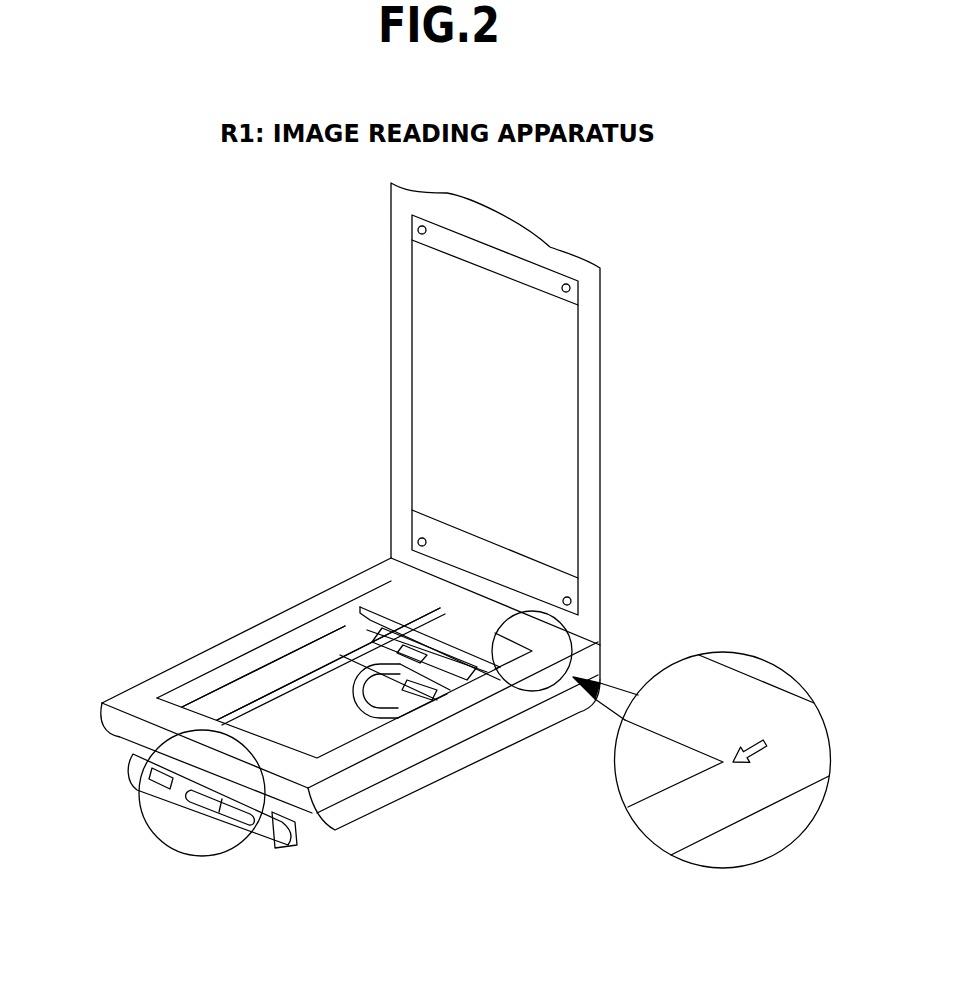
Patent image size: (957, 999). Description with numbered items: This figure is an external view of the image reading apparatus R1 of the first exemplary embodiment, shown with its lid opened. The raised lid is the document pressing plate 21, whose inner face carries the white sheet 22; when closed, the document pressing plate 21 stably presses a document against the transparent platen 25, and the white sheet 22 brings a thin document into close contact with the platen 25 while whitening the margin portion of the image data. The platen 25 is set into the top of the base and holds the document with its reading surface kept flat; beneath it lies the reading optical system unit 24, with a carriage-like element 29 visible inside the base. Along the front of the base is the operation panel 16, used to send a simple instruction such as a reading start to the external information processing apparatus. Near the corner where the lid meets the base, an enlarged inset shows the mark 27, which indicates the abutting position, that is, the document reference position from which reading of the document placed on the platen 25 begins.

The operation panel 16 is at (140, 815).
The document pressing plate 21 is at (402, 199).
The white sheet 22 is at (428, 313).
The reading optical system unit 24 is at (388, 605).
The transparent platen (document positioning plate) 25 is at (302, 653).
The abutting position mark 27 is at (600, 623).
The reading unit (carriage) 29 is at (470, 627).
The image reading apparatus R1 is at (350, 694).